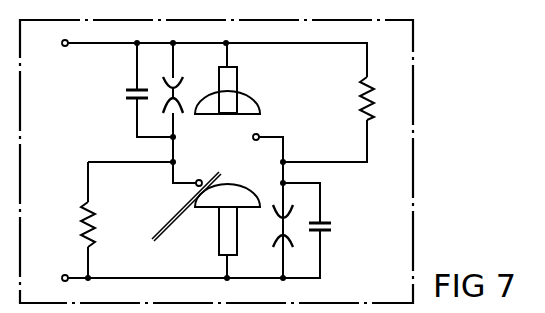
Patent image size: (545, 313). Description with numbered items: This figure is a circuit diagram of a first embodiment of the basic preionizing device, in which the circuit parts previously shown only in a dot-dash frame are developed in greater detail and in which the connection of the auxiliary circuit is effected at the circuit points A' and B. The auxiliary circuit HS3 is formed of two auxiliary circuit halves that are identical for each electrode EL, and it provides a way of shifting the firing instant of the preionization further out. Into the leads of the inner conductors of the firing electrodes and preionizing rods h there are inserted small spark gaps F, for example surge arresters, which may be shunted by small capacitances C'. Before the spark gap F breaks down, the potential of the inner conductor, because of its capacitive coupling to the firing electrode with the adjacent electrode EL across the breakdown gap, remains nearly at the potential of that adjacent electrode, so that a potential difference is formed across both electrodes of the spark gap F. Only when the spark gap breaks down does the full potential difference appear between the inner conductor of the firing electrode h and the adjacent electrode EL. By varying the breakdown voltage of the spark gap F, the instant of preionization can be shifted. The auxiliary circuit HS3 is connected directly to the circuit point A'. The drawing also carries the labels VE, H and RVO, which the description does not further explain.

The amplifier / evaluation unit enclosure VE is at (455, 181).
The circuit point A' is at (65, 59).
The circuit point B is at (62, 276).
The auxiliary circuit HS3 is at (85, 121).
The capacitance C' is at (229, 143).
The spark gap F is at (177, 95).
The electrode EL is at (208, 226).
The firing electrode and preionizing rod h is at (258, 134).
The node H is at (267, 171).
The series resistor RVO is at (53, 198).